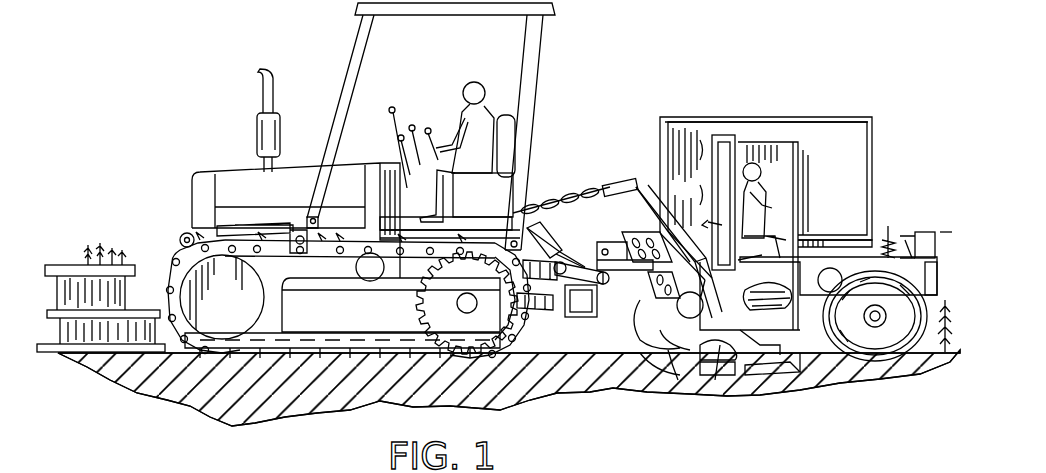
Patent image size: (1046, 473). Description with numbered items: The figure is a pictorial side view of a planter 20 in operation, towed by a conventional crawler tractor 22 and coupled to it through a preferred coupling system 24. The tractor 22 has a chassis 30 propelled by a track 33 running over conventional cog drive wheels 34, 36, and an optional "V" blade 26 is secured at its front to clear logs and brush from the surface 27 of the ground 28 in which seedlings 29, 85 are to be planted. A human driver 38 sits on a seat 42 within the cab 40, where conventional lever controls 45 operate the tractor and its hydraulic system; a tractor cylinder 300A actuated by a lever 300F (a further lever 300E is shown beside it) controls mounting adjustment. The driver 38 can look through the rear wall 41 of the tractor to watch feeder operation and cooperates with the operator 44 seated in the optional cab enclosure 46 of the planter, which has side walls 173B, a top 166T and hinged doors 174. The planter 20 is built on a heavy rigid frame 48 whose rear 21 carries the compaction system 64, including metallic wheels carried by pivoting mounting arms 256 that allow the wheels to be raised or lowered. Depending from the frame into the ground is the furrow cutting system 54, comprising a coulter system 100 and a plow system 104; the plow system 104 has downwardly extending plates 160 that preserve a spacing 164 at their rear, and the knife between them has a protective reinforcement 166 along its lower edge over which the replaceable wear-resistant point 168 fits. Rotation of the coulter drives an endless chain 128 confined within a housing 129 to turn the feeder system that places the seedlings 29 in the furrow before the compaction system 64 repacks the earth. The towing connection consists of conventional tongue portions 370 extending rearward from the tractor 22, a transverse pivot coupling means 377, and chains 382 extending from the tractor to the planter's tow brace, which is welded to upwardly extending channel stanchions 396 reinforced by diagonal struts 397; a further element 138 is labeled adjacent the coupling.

The planter 20 is at (782, 247).
The rear of the planter 21 is at (948, 216).
The crawler tractor 22 is at (360, 180).
The coupling system 24 is at (585, 148).
The "V" blade 26 is at (70, 264).
The ground surface 27 is at (585, 378).
The ground 28 is at (205, 402).
The seedlings 29 is at (948, 302).
The chassis 30 is at (232, 190).
The track 33 is at (182, 264).
The cog drive wheel 34 is at (495, 318).
The cog drive wheel 36 is at (190, 297).
The driver 38 is at (492, 100).
The cab 40 is at (372, 42).
The rear wall of tractor 41 is at (542, 48).
The seat 42 is at (512, 118).
The operator 44 is at (788, 193).
The control levers 45 is at (408, 95).
The cab enclosure 46 is at (838, 163).
The frame 48 is at (937, 253).
The furrow cutting system 54 is at (670, 378).
The compaction system 64 is at (884, 366).
The seedlings 85 is at (100, 244).
The coulter system 100 is at (642, 380).
The plow system 104 is at (810, 370).
The endless chain 128 is at (762, 312).
The housing 129 is at (812, 268).
The drawbar housing 138 is at (682, 362).
The plow plate 160 is at (820, 352).
The spacing 164 is at (735, 362).
The protective reinforcement 166 is at (762, 380).
The top 166T is at (748, 114).
The wear-resistant point 168 is at (705, 380).
The side wall 173B is at (690, 204).
The door 174 is at (725, 140).
The mounting arm 256 is at (940, 230).
The tractor cylinder 300A is at (548, 240).
The control lever 300E is at (427, 142).
The lever 300F is at (445, 118).
The tongue portion 370 is at (580, 320).
The transverse pivot coupling means 377 is at (645, 312).
The chains 382 is at (565, 185).
The channel stanchion 396 is at (620, 186).
The diagonal strut 397 is at (640, 215).